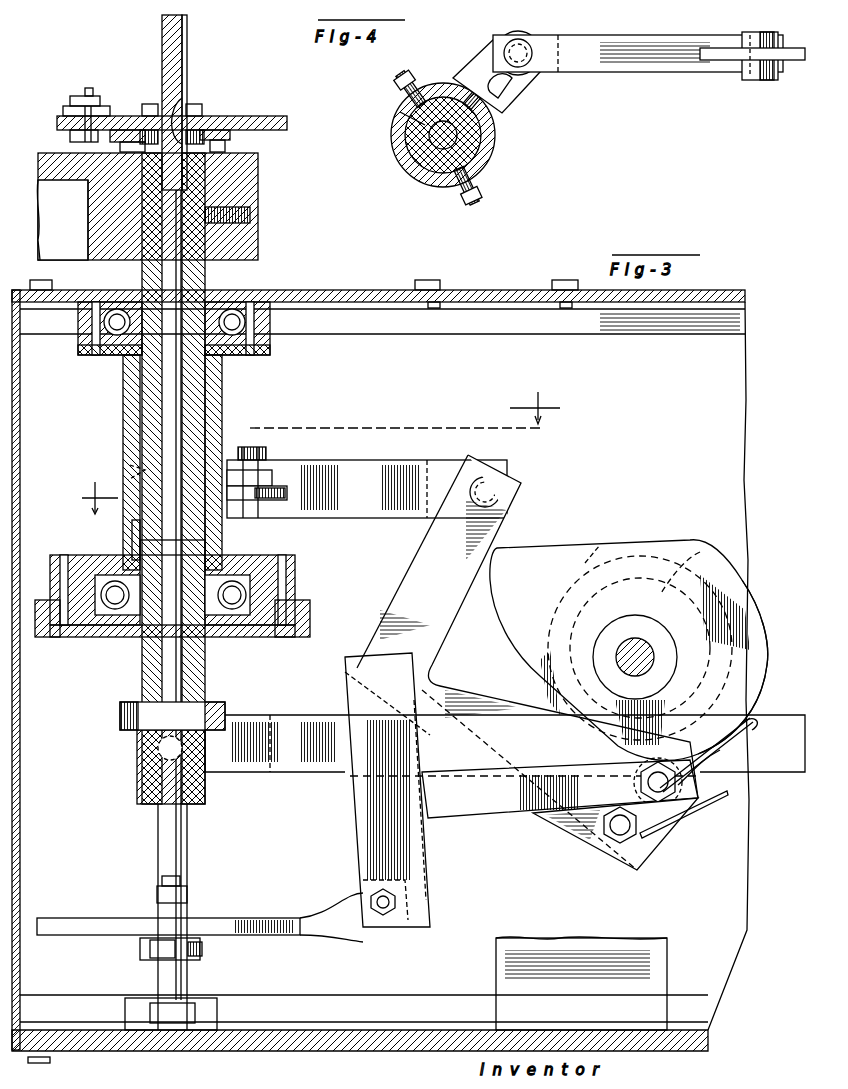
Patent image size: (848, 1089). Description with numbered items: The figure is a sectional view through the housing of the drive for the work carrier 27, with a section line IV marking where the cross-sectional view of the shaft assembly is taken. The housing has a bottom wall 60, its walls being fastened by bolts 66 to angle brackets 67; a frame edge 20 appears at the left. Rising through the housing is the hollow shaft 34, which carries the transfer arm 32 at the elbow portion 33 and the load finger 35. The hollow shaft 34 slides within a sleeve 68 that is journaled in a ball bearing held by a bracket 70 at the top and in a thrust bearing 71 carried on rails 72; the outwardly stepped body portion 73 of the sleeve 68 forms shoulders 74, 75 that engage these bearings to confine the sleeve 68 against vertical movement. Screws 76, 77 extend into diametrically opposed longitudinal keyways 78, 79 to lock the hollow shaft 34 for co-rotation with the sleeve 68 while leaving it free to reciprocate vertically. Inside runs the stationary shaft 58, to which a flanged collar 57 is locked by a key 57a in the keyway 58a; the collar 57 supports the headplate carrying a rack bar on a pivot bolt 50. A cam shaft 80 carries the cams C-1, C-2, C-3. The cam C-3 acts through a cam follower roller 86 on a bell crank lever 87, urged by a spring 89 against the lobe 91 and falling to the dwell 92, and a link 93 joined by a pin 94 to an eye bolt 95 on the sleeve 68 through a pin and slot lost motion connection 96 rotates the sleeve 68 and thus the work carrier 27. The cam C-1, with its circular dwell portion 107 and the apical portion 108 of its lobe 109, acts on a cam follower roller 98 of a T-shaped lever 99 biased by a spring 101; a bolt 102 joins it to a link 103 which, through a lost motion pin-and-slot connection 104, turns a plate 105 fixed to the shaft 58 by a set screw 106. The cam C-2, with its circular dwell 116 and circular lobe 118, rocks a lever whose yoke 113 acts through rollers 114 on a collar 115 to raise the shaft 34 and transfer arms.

In FIG. 3, the frame 20 is at (120, 1052).
In FIG. 3, the work carrier 27 is at (79, 242).
In FIG. 3, the transfer arm 32 is at (80, 190).
In FIG. 3, the elbow portion 33 is at (258, 188).
In FIG. 3, the hollow shaft 34 is at (206, 270).
In FIG. 4, the hollow shaft 34 is at (410, 140).
In FIG. 3, the load finger 35 is at (250, 215).
In FIG. 3, the pivot bolt 50 is at (89, 88).
In FIG. 3, the flanged collar 57 is at (205, 128).
In FIG. 3, the key 57a is at (186, 100).
In FIG. 3, the shaft 58 is at (163, 20).
In FIG. 4, the shaft 58 is at (460, 128).
In FIG. 3, the keyway 58a is at (186, 50).
In FIG. 3, the bottom wall 60 is at (245, 1052).
In FIG. 3, the bolts 66 is at (430, 283).
In FIG. 3, the angle brackets 67 is at (410, 322).
In FIG. 3, the sleeve 68 is at (223, 400).
In FIG. 4, the sleeve 68 is at (418, 180).
In FIG. 3, the bracket 70 is at (272, 350).
In FIG. 3, the thrust bearing 71 is at (225, 622).
In FIG. 3, the rails 72 is at (52, 638).
In FIG. 3, the outwardly stepped body portion 73 is at (123, 432).
In FIG. 3, the shoulder 74 is at (226, 362).
In FIG. 3, the shoulder 75 is at (215, 555).
In FIG. 3, the screw 76 is at (130, 523).
In FIG. 4, the screw 76 is at (410, 82).
In FIG. 4, the screw 77 is at (470, 180).
In FIG. 3, the keyway 78 is at (125, 470).
In FIG. 4, the keyway 78 is at (400, 112).
In FIG. 4, the keyway 79 is at (470, 138).
In FIG. 3, the cam shaft 80 is at (655, 660).
In FIG. 3, the cam follower roller 86 is at (625, 855).
In FIG. 3, the bell crank lever 87 is at (575, 830).
In FIG. 3, the spring 89 is at (715, 805).
In FIG. 3, the lobe 91 is at (732, 778).
In FIG. 3, the dwell 92 is at (636, 616).
In FIG. 3, the link 93 is at (370, 462).
In FIG. 4, the link 93 is at (658, 36).
In FIG. 3, the pin 94 is at (500, 480).
In FIG. 4, the pin 94 is at (752, 30).
In FIG. 3, the eye bolt 95 is at (275, 515).
In FIG. 4, the eye bolt 95 is at (528, 38).
In FIG. 3, the pin and slot lost motion connection 96 is at (266, 452).
In FIG. 4, the pin and slot lost motion connection 96 is at (528, 78).
In FIG. 3, the cam follower roller 98 is at (672, 805).
In FIG. 3, the T-shaped lever 99 is at (488, 808).
In FIG. 3, the spring 101 is at (755, 728).
In FIG. 3, the bolt 102 is at (380, 920).
In FIG. 3, the link 103 is at (290, 912).
In FIG. 3, the lost motion pin-and-slot connection 104 is at (150, 895).
In FIG. 3, the plate 105 is at (80, 927).
In FIG. 3, the set screw 106 is at (205, 948).
In FIG. 3, the circular dwell portion 107 is at (740, 657).
In FIG. 3, the apical portion 108 is at (495, 550).
In FIG. 3, the lobe 109 is at (515, 638).
In FIG. 3, the yoke 113 is at (290, 715).
In FIG. 3, the rollers 114 is at (150, 755).
In FIG. 3, the collar 115 is at (130, 703).
In FIG. 3, the circular dwell 116 is at (612, 548).
In FIG. 3, the circular lobe 118 is at (752, 633).
In FIG. 3, the cam C-1 is at (580, 555).
In FIG. 3, the cam C-2 is at (706, 550).
In FIG. 3, the cam C-3 is at (545, 692).
In FIG. 3, the section line IV— IV is at (310, 451).